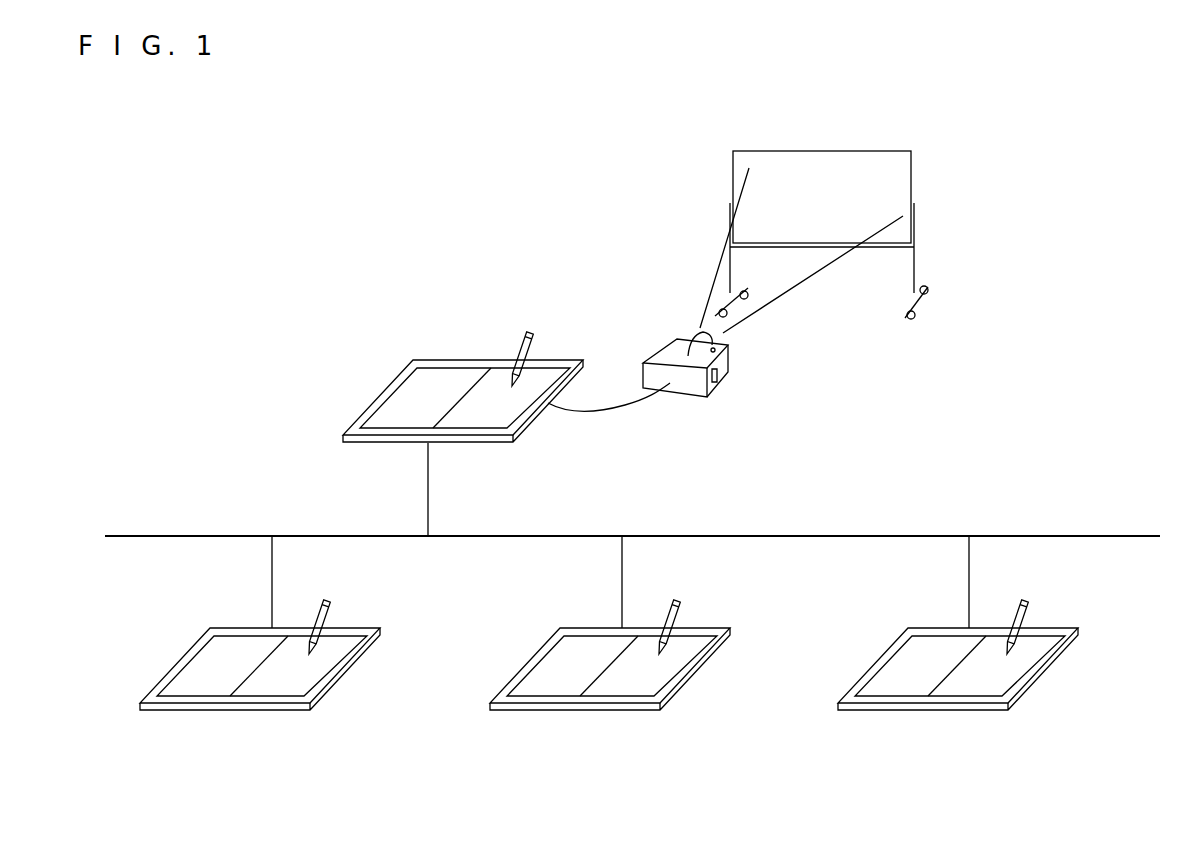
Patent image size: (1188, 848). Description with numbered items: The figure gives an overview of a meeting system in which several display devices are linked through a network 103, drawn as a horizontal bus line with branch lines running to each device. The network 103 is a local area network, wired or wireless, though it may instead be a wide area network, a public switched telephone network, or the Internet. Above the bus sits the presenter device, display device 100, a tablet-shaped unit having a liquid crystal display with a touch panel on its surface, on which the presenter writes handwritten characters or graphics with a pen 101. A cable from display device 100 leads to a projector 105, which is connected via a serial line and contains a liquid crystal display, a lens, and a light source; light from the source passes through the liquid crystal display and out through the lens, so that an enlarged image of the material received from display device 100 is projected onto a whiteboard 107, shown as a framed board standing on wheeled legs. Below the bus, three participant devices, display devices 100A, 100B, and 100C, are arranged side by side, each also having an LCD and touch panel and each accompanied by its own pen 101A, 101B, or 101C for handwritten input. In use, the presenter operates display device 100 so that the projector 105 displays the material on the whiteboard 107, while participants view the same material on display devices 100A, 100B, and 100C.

The display device 100 is at (440, 358).
The pen 101 is at (530, 332).
The network 103 is at (1028, 535).
The projector 105 is at (722, 380).
The whiteboard 107 is at (848, 150).
The display device 100A is at (260, 714).
The pen 101A is at (371, 616).
The display device 100B is at (610, 714).
The pen 101B is at (721, 616).
The display device 100C is at (958, 714).
The pen 101C is at (1069, 616).